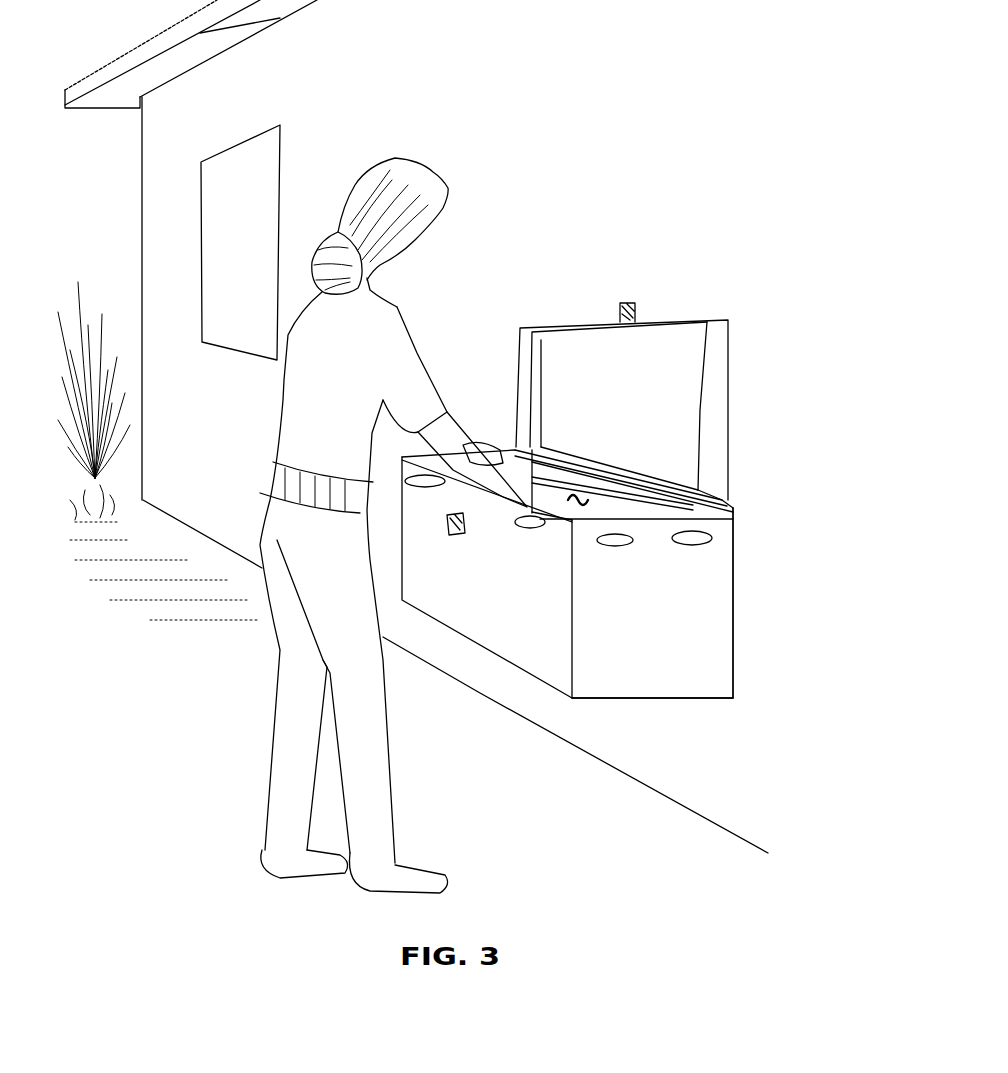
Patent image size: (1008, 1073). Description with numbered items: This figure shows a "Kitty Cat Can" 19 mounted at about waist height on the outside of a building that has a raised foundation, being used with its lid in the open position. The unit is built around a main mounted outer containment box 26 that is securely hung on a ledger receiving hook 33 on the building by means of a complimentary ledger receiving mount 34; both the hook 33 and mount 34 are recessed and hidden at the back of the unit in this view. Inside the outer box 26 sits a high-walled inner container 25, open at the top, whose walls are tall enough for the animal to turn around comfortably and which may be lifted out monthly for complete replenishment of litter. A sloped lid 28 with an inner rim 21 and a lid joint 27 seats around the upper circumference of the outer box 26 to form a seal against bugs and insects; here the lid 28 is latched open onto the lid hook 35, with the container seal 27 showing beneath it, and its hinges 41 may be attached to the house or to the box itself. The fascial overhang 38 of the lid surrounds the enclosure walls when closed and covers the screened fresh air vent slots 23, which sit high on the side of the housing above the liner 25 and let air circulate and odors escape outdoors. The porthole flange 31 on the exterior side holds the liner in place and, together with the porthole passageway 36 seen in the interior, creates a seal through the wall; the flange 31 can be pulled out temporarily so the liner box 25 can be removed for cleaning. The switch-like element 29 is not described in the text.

The Kitty Cat Can 19 is at (681, 223).
The inner rim 21 is at (538, 340).
The screened fresh air vent slots 23 is at (697, 542).
The high-walled inner container 25 is at (590, 495).
The main mounted outer containment box 26 is at (732, 650).
The lid joint 27 is at (532, 377).
The sloped lid 28 is at (728, 347).
The switch 29 is at (445, 537).
The porthole flange 31 is at (620, 517).
The ledger receiving hook 33 is at (807, 603).
The ledger receiving mount 34 is at (735, 547).
The lid hook 35 is at (635, 305).
The porthole passageway 36 is at (637, 518).
The fascial overhang 38 is at (702, 407).
The hinges 41 is at (722, 502).